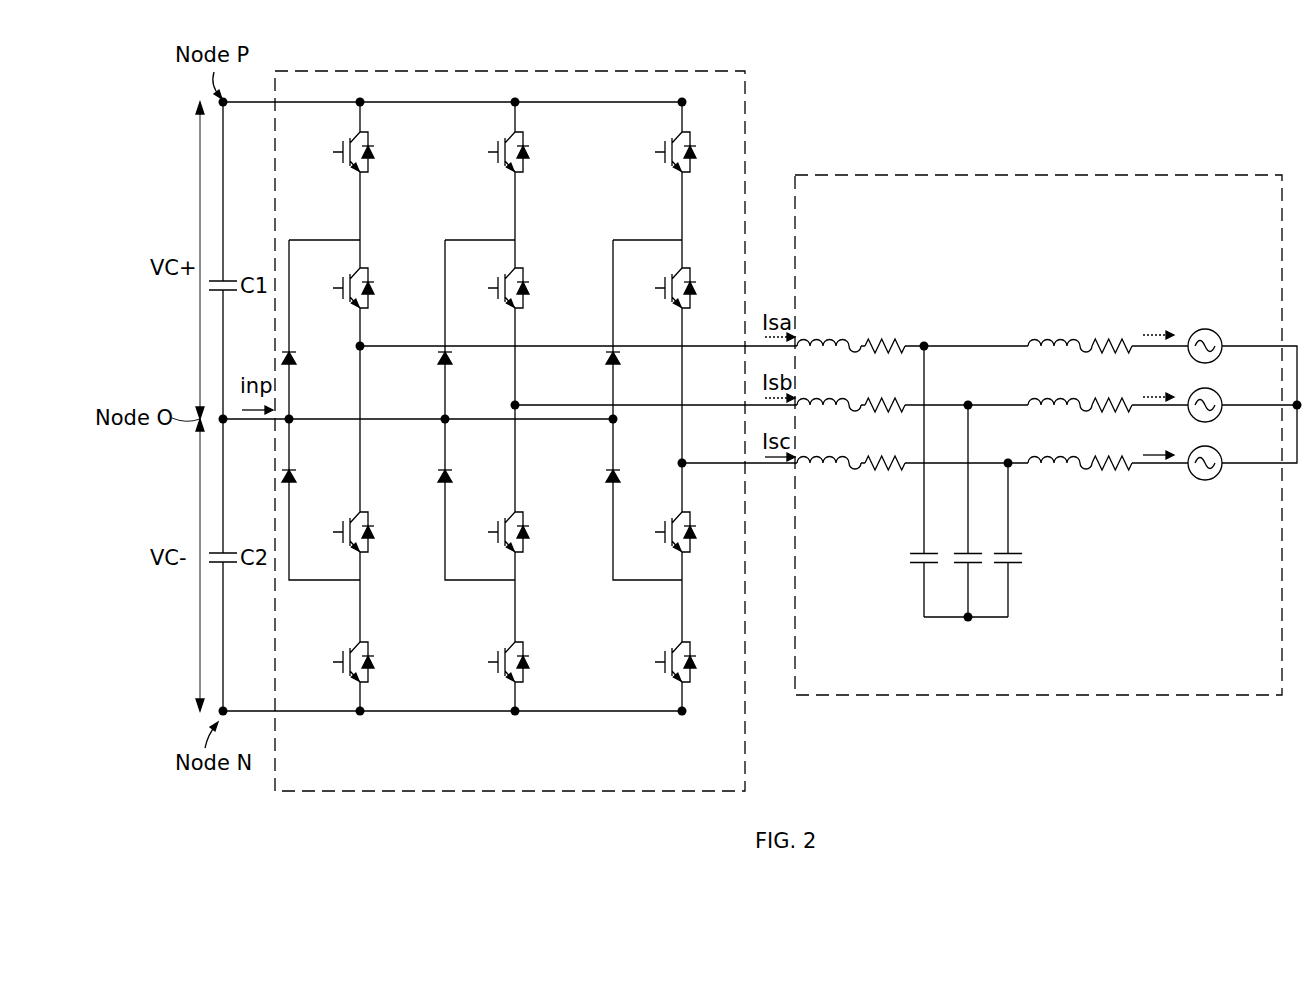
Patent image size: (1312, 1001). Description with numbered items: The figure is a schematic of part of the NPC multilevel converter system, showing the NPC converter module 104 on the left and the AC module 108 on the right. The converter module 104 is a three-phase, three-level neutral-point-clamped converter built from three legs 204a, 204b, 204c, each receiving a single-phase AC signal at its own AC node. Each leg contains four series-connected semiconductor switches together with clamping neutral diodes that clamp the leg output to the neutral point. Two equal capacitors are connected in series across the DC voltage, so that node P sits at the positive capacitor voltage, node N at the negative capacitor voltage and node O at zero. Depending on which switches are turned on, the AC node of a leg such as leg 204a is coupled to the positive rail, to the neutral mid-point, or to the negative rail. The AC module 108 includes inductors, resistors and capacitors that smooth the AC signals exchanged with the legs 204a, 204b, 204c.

The NPC converter module 104 is at (653, 795).
The AC module 108 is at (1064, 698).
The leg 204a is at (356, 722).
The leg 204b is at (511, 722).
The leg 204c is at (678, 722).